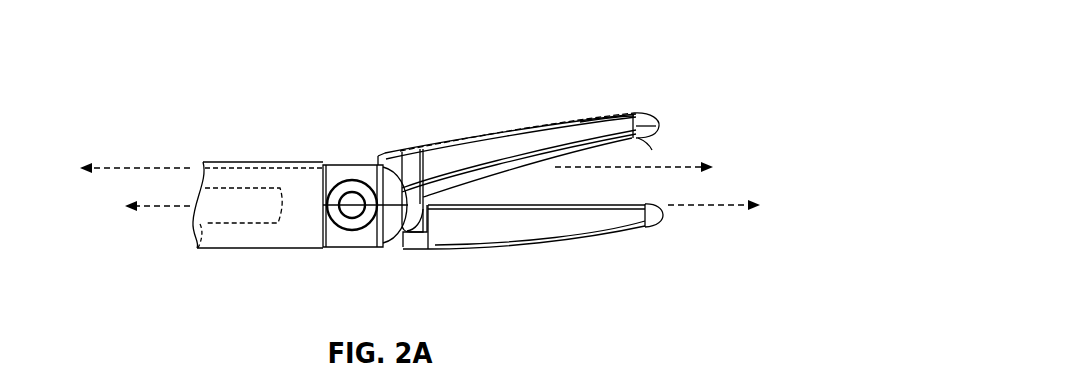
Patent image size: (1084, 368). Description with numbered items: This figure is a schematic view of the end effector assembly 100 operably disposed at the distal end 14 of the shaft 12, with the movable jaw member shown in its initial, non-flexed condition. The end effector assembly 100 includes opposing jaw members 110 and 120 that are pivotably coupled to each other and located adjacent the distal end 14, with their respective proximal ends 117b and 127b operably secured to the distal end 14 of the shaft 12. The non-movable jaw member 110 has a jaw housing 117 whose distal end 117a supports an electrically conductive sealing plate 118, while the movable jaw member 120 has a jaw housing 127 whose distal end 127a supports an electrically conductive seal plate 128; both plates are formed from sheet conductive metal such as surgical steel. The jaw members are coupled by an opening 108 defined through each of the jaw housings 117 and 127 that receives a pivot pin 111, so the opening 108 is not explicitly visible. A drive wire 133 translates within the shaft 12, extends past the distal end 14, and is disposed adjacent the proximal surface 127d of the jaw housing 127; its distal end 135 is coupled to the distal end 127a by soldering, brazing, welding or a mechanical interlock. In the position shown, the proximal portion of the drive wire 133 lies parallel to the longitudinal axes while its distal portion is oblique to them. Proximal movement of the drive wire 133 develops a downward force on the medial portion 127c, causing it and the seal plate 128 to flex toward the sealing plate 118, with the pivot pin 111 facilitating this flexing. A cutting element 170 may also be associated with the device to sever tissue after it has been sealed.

The end effector assembly 100 is at (675, 46).
The shaft 12 is at (222, 250).
The distal end 14 is at (323, 162).
The opening 108 is at (338, 228).
The jaw member 110 is at (633, 228).
The pivot pin 111 is at (353, 210).
The jaw housing 117 is at (546, 252).
The distal end 117a is at (667, 222).
The proximal end 117b is at (392, 252).
The sealing plate 118 is at (610, 205).
The jaw member 120 is at (657, 125).
The jaw housing 127 is at (599, 104).
The distal end 127a is at (643, 115).
The proximal end 127b is at (381, 152).
The medial portion 127c is at (457, 160).
The proximal surface 127d is at (492, 128).
The seal plate 128 is at (635, 145).
The drive wire 133 is at (230, 167).
The distal end 135 is at (620, 117).
The cutting element 170 is at (198, 250).